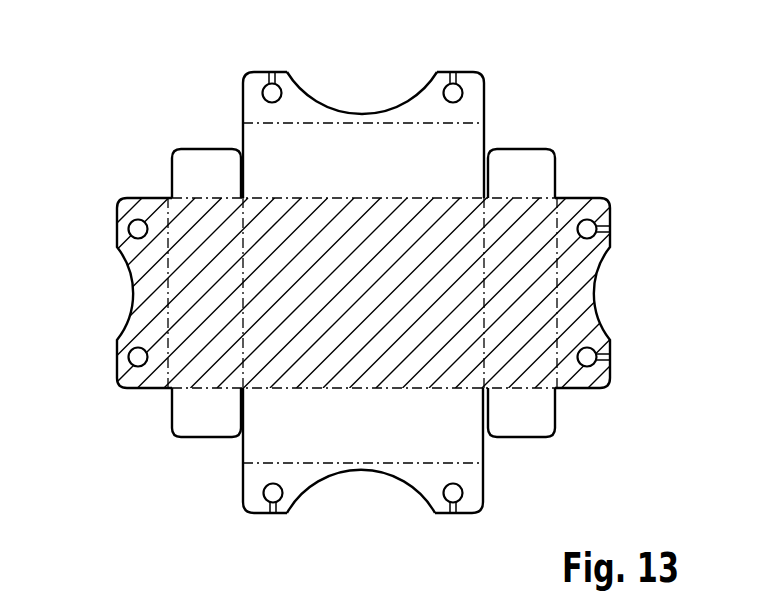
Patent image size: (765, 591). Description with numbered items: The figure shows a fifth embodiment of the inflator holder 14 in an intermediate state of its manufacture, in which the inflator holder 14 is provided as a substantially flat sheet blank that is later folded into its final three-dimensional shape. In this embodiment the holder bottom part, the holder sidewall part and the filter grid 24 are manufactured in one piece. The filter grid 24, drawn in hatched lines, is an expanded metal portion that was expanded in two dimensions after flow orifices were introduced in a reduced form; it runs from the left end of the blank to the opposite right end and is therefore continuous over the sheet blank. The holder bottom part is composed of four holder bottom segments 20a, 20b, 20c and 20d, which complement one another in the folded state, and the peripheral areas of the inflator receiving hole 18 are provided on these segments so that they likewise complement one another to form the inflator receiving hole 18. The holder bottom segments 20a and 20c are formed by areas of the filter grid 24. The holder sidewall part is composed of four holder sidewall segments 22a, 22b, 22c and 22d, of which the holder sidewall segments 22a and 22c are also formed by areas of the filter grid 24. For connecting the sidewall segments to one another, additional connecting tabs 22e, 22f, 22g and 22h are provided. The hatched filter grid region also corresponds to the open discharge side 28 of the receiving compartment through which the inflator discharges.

The inflator holder 14 is at (590, 60).
The inflator receiving hole 18 is at (402, 72).
The holder bottom segment 20a is at (132, 373).
The holder bottom segment 20b is at (253, 495).
The holder bottom segment 20c is at (592, 377).
The holder bottom segment 20d is at (253, 88).
The holder sidewall segment 22a is at (188, 268).
The holder sidewall segment 22b is at (362, 435).
The holder sidewall segment 22c is at (545, 285).
The holder sidewall segment 22d is at (363, 147).
The connecting tab 22e is at (182, 177).
The connecting tab 22f is at (182, 413).
The connecting tab 22g is at (542, 413).
The connecting tab 22h is at (542, 177).
The filter grid 24 is at (403, 242).
The discharge side 28 is at (382, 293).